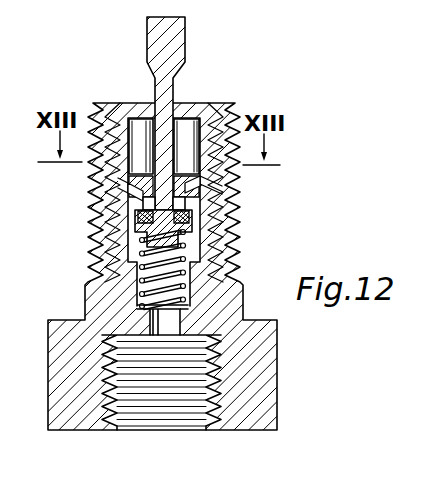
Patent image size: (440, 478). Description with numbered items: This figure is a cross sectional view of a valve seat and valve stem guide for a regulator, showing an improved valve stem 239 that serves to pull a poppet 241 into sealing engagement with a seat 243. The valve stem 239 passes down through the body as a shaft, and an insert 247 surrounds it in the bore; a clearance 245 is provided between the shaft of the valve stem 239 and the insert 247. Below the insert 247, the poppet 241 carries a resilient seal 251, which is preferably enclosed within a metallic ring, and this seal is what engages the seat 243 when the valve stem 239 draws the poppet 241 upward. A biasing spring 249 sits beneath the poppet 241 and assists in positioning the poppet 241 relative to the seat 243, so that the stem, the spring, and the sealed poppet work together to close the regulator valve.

The valve stem 239 is at (166, 86).
The insert 247 is at (128, 112).
The clearance 245 is at (178, 190).
The resilient seal 251 is at (176, 211).
The poppet 241 is at (190, 228).
The seat 243 is at (138, 209).
The biasing spring 249 is at (140, 293).